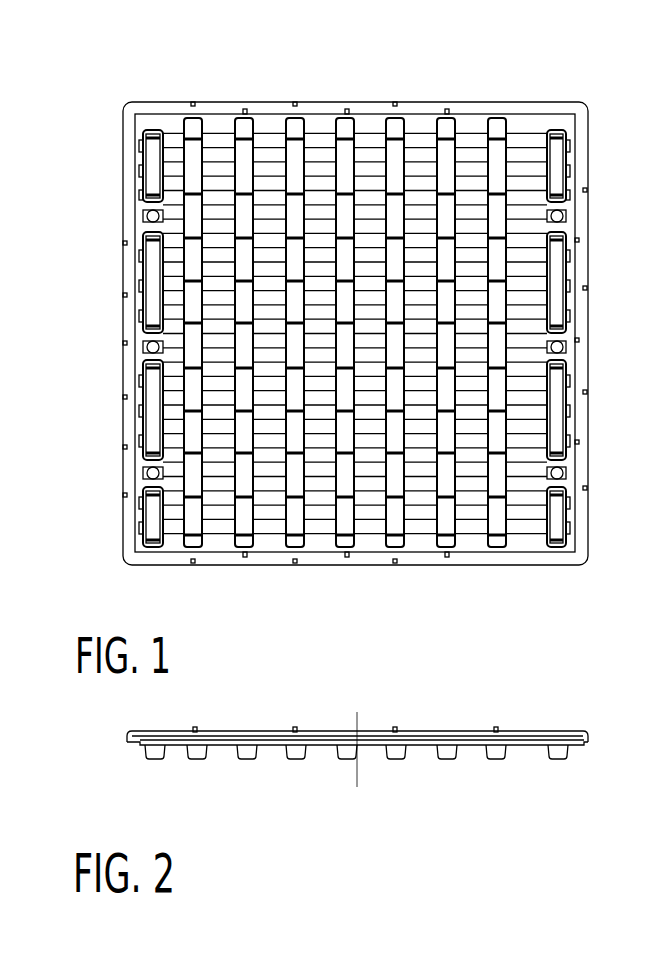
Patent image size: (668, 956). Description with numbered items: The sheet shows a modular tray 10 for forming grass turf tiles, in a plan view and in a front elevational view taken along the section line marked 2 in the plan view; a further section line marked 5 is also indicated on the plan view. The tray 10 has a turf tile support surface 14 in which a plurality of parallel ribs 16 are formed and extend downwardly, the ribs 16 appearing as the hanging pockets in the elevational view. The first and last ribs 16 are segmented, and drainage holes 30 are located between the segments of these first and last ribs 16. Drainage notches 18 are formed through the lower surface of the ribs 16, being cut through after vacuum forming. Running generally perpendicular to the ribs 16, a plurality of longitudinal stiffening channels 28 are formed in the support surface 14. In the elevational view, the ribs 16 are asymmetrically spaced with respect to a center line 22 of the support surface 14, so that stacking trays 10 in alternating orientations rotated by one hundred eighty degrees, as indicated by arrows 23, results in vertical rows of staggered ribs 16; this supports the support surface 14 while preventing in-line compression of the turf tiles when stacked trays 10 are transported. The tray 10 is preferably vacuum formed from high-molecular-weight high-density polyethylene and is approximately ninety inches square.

In FIG. 1, the modular tray 10 is at (593, 93).
In FIG. 2, the modular tray 10 is at (591, 720).
In FIG. 1, the turf tile support surface 14 is at (368, 122).
In FIG. 1, the ribs 16 is at (153, 130).
In FIG. 2, the ribs 16 is at (158, 757).
In FIG. 1, the drainage notches 18 is at (558, 136).
In FIG. 2, the center line 22 is at (358, 713).
In FIG. 2, the arrows 23 is at (340, 735).
In FIG. 1, the longitudinal stiffening channels 28 is at (173, 525).
In FIG. 1, the drainage holes 30 is at (563, 212).
In FIG. 1, the section line 5- 5 is at (497, 110).
In FIG. 1, the section line 2- 2 is at (92, 553).